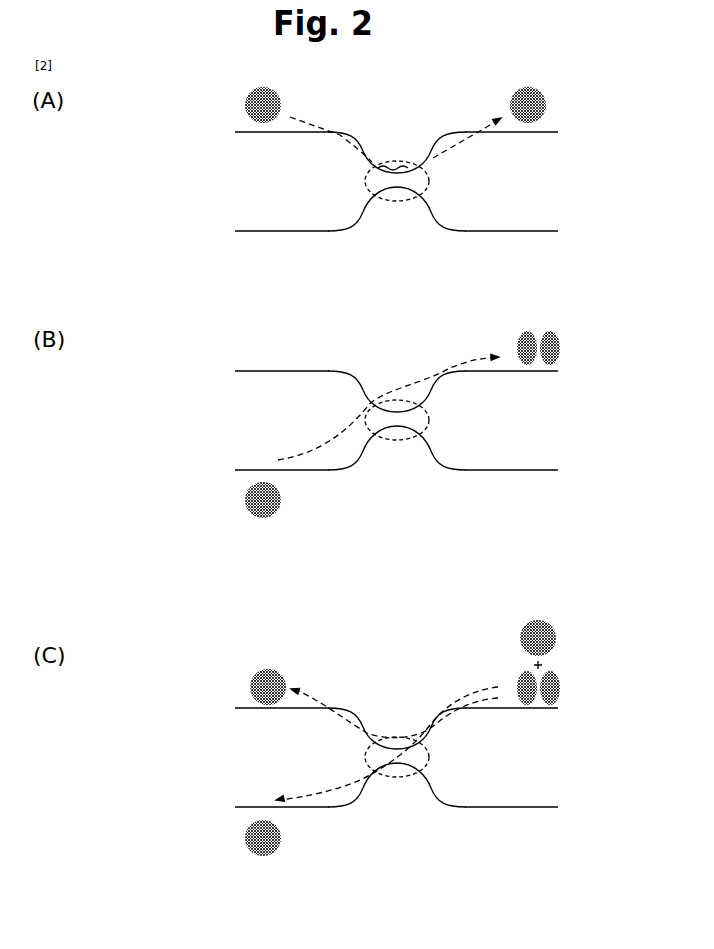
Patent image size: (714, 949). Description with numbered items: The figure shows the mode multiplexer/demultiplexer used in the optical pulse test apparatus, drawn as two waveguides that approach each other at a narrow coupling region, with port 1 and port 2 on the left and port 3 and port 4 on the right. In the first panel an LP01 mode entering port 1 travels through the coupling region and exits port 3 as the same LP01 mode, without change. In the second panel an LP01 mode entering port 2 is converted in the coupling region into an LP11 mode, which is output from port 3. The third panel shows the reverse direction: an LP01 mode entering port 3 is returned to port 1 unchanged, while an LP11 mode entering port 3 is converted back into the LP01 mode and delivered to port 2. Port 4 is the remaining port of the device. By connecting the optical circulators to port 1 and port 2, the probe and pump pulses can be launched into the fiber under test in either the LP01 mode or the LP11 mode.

The LP01 mode LP01 is at (363, 464).
The LP11 mode LP11 is at (563, 509).
The port 1 is at (282, 151).
The port 2 is at (282, 248).
The port 3 is at (517, 149).
The port 4 is at (522, 250).